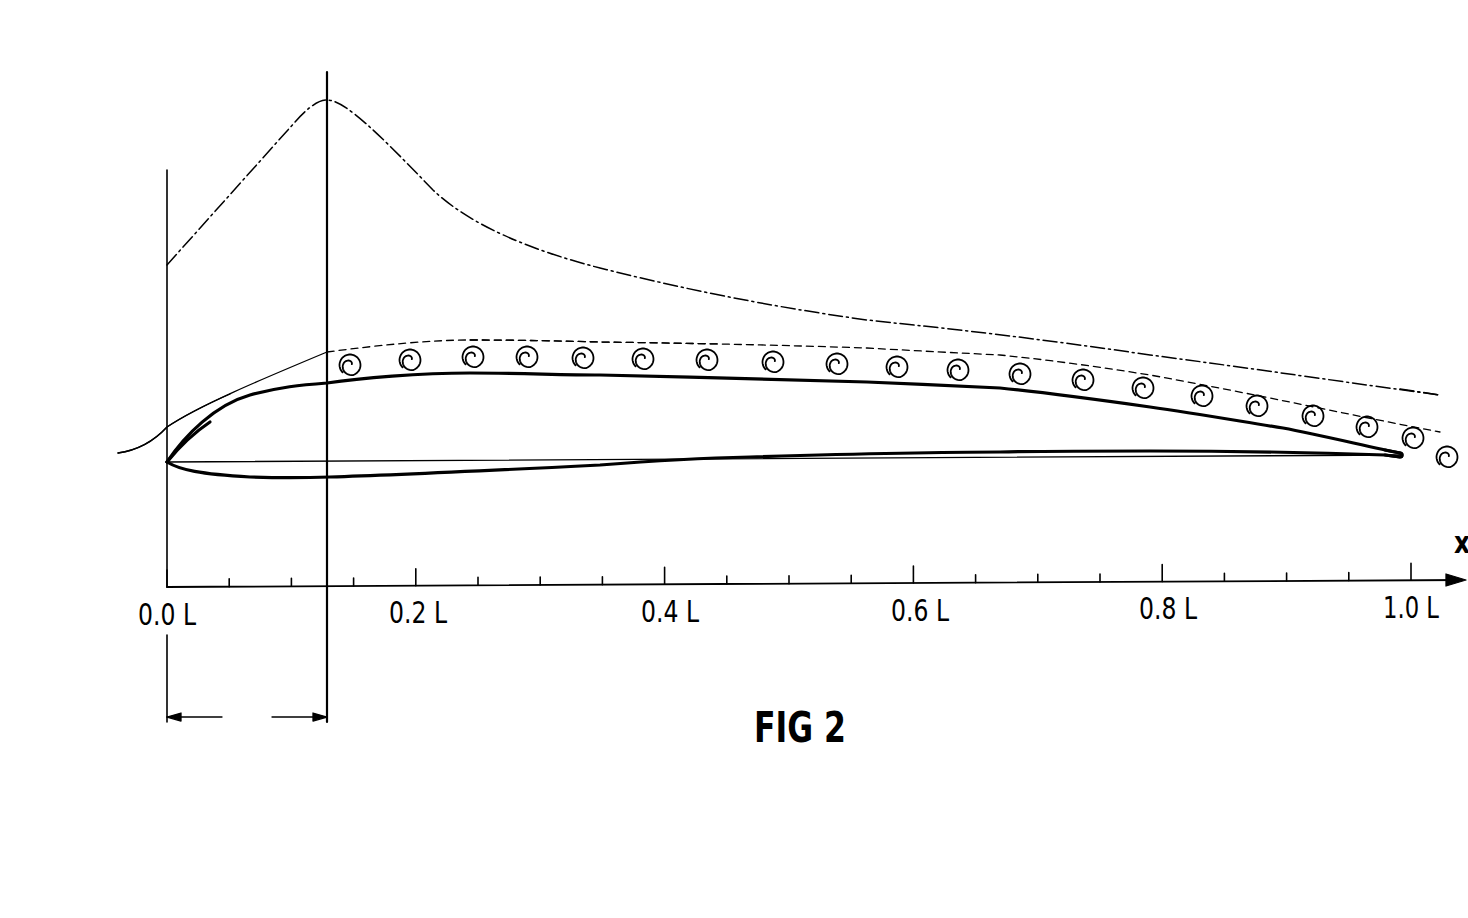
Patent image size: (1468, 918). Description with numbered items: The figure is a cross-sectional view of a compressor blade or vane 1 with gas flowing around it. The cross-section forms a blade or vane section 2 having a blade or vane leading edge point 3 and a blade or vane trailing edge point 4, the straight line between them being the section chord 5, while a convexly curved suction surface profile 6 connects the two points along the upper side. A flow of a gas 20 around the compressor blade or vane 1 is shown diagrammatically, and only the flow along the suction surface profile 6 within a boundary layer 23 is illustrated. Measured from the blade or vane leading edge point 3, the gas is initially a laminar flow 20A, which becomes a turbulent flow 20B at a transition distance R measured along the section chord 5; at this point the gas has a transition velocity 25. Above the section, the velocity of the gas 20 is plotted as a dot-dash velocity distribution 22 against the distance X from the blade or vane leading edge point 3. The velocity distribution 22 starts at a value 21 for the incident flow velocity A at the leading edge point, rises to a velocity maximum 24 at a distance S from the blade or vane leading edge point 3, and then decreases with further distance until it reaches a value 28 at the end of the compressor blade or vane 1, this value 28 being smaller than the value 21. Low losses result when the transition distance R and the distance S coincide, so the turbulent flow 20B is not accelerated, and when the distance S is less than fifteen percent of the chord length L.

The compressor blade or vane 1 is at (670, 175).
The blade or vane section 2 is at (860, 415).
The blade or vane leading edge point 3 is at (167, 462).
The blade or vane trailing edge point 4 is at (1403, 457).
The section chord 5 is at (358, 462).
The suction surface profile 6 is at (742, 375).
The flow of a gas 20 is at (282, 363).
The laminar flow 20A is at (201, 405).
The turbulent flow 20B is at (452, 338).
The value for incident flow velocity A 21 is at (168, 265).
The velocity distribution 22 is at (262, 150).
The boundary layer 23 is at (558, 352).
The velocity maximum 24 is at (327, 97).
The transition velocity 25 is at (247, 721).
The value at end of blade or vane 28 is at (1440, 393).